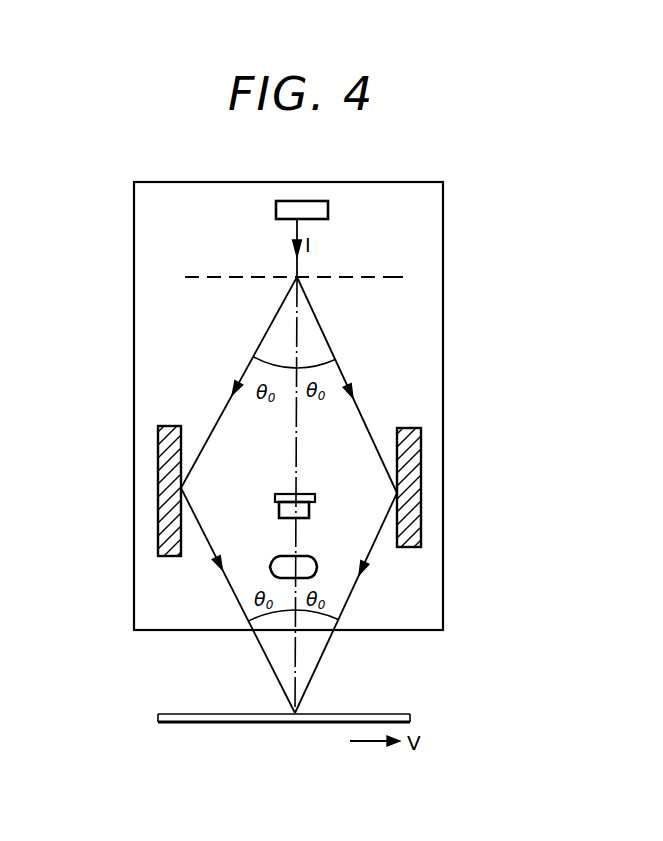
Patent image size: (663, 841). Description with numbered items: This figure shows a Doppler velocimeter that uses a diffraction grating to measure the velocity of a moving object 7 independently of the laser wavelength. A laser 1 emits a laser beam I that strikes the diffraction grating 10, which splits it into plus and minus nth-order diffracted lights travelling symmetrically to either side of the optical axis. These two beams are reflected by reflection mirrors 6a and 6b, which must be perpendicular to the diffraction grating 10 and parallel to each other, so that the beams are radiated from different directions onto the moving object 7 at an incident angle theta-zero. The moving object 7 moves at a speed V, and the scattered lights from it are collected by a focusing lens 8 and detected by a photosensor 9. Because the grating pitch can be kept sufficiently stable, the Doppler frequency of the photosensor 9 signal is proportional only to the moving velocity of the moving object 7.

The laser 1 is at (276, 210).
The diffraction grating 10 is at (389, 276).
The reflection mirror 6a is at (158, 443).
The reflection mirror 6b is at (421, 450).
The photosensor 9 is at (274, 498).
The focusing lens 8 is at (270, 558).
The moving object 7 is at (180, 713).